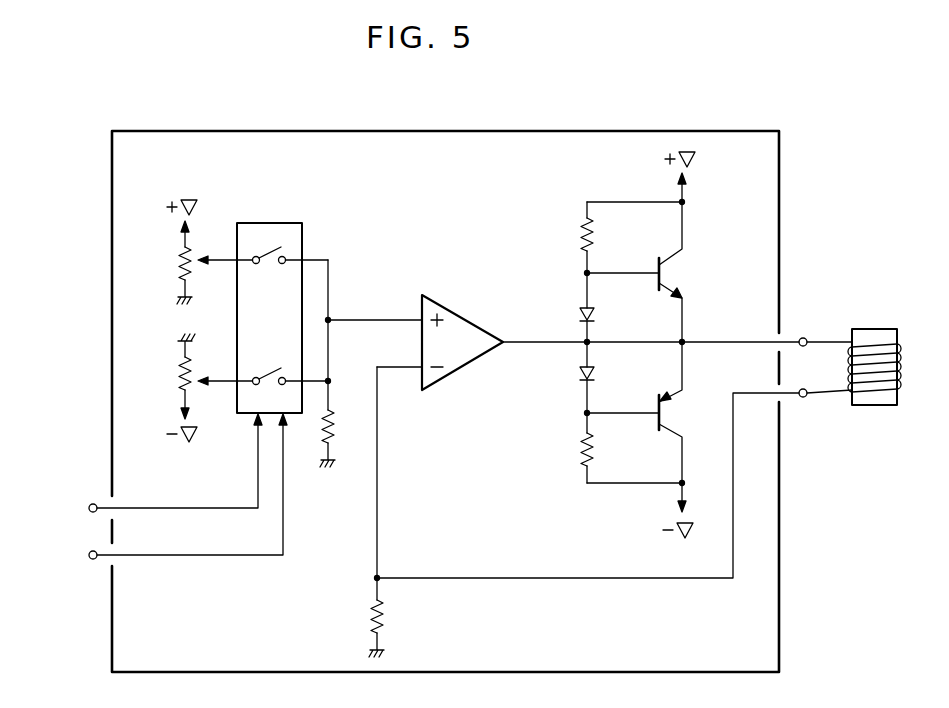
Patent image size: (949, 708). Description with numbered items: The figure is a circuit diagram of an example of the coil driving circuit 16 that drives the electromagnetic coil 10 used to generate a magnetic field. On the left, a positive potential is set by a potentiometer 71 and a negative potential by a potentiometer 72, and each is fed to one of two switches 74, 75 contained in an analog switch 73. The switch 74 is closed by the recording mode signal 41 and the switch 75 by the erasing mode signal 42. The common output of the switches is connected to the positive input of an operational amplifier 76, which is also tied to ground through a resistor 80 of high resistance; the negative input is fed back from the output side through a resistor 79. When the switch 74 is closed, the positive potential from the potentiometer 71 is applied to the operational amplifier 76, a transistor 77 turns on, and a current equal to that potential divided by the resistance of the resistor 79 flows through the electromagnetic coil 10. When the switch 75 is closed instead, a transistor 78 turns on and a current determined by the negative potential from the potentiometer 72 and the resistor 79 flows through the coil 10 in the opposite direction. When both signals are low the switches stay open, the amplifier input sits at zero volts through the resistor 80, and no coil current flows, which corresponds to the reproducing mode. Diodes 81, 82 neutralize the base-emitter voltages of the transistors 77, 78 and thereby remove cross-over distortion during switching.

The electromagnetic coil 10 is at (899, 330).
The coil driving circuit 16 is at (312, 130).
The recording mode signal 41 is at (154, 508).
The erasing mode signal 42 is at (154, 555).
The potentiometer 71 is at (178, 261).
The potentiometer 72 is at (179, 379).
The analog switch 73 is at (275, 223).
The switch 74 is at (270, 262).
The switch 75 is at (271, 372).
The operational amplifier 76 is at (470, 325).
The transistor 77 is at (680, 272).
The transistor 78 is at (680, 415).
The resistor 79 is at (388, 621).
The resistor 80 is at (334, 430).
The diode 81 is at (599, 322).
The diode 82 is at (599, 375).